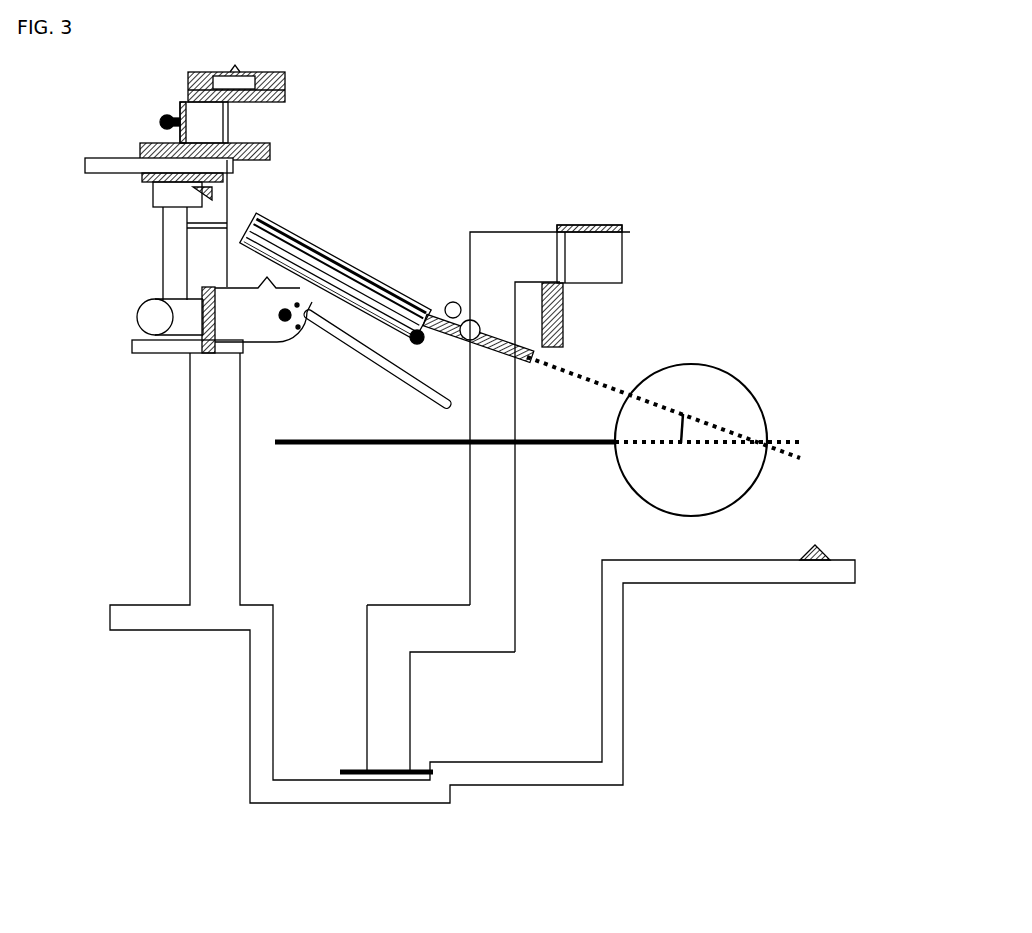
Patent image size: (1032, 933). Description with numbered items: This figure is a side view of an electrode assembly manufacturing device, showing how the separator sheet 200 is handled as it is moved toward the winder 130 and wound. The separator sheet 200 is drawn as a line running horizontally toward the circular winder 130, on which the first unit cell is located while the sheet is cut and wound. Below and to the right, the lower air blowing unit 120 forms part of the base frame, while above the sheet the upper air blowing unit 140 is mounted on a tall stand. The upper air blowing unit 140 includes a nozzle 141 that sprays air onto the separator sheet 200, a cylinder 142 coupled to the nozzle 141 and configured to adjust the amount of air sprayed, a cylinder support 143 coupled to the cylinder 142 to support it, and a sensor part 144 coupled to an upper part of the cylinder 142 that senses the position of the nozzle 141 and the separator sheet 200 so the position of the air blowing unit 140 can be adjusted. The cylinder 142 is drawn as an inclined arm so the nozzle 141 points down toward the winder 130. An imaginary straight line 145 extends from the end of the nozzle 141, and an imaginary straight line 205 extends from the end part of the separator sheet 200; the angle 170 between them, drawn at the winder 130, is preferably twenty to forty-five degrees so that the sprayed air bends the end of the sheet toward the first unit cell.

The lower air blowing unit 120 is at (800, 545).
The winder 130 is at (773, 395).
The upper air blowing unit 140 is at (160, 140).
The nozzle 141 is at (527, 357).
The cylinder 142 is at (352, 337).
The cylinder support 143 is at (163, 250).
The sensor part 144 is at (513, 231).
The imaginary straight line 145 is at (565, 376).
The angle 170 is at (683, 433).
The separator sheet 200 is at (293, 452).
The imaginary straight line 205 is at (798, 442).